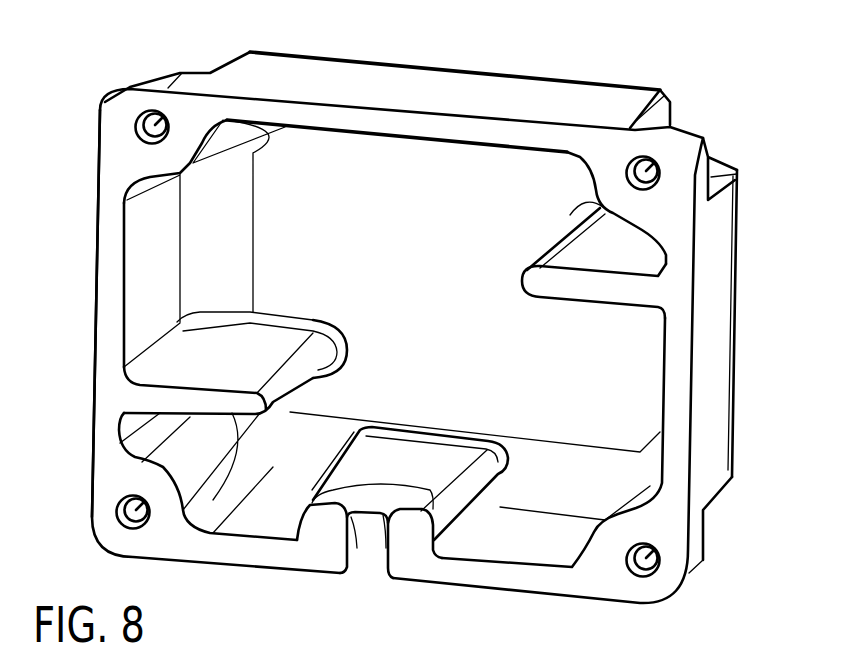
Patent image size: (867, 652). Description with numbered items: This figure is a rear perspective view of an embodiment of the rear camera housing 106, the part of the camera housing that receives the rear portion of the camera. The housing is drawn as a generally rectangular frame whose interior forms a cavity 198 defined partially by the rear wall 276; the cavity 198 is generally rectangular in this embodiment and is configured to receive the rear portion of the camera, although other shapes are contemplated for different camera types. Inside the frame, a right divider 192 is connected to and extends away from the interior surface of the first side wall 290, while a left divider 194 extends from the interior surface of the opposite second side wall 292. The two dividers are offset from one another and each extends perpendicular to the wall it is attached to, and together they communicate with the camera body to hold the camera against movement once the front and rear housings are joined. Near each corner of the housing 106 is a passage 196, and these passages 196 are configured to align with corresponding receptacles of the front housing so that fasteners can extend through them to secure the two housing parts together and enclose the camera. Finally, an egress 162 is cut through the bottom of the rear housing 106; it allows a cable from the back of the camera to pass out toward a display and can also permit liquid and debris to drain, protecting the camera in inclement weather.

The rear camera housing 106 is at (738, 224).
The egress 162 is at (376, 556).
The right divider 192 is at (598, 308).
The left divider 194 is at (180, 390).
The passage 196 is at (138, 135).
The cavity 198 is at (423, 170).
The rear wall 276 is at (496, 185).
The first side wall 290 is at (680, 381).
The second side wall 292 is at (103, 278).